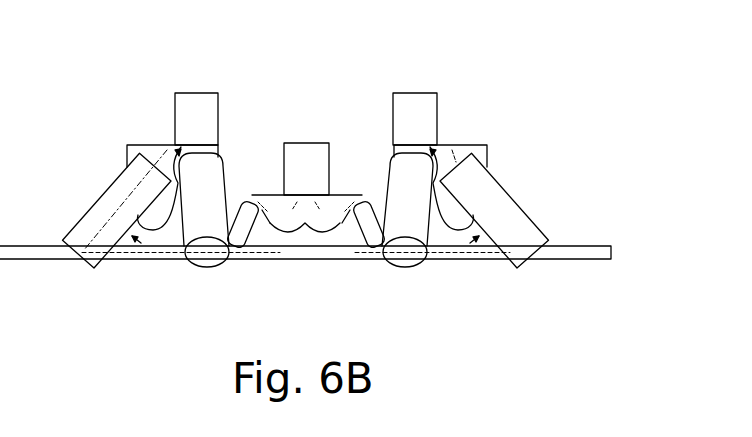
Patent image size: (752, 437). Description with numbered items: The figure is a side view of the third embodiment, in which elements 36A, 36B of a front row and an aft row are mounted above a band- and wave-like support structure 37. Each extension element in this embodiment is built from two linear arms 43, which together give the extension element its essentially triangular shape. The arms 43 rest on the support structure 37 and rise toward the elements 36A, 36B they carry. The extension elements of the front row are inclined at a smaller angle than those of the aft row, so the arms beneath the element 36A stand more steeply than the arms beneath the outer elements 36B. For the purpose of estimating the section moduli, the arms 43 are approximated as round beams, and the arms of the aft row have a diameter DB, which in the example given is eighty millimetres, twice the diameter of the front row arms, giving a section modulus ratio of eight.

The central component 36A is at (308, 150).
The outer component 36B is at (205, 97).
The support structure 37 is at (600, 259).
The linear arm 43 is at (248, 244).
The diameter of the aft-row extension element arms DB is at (516, 201).